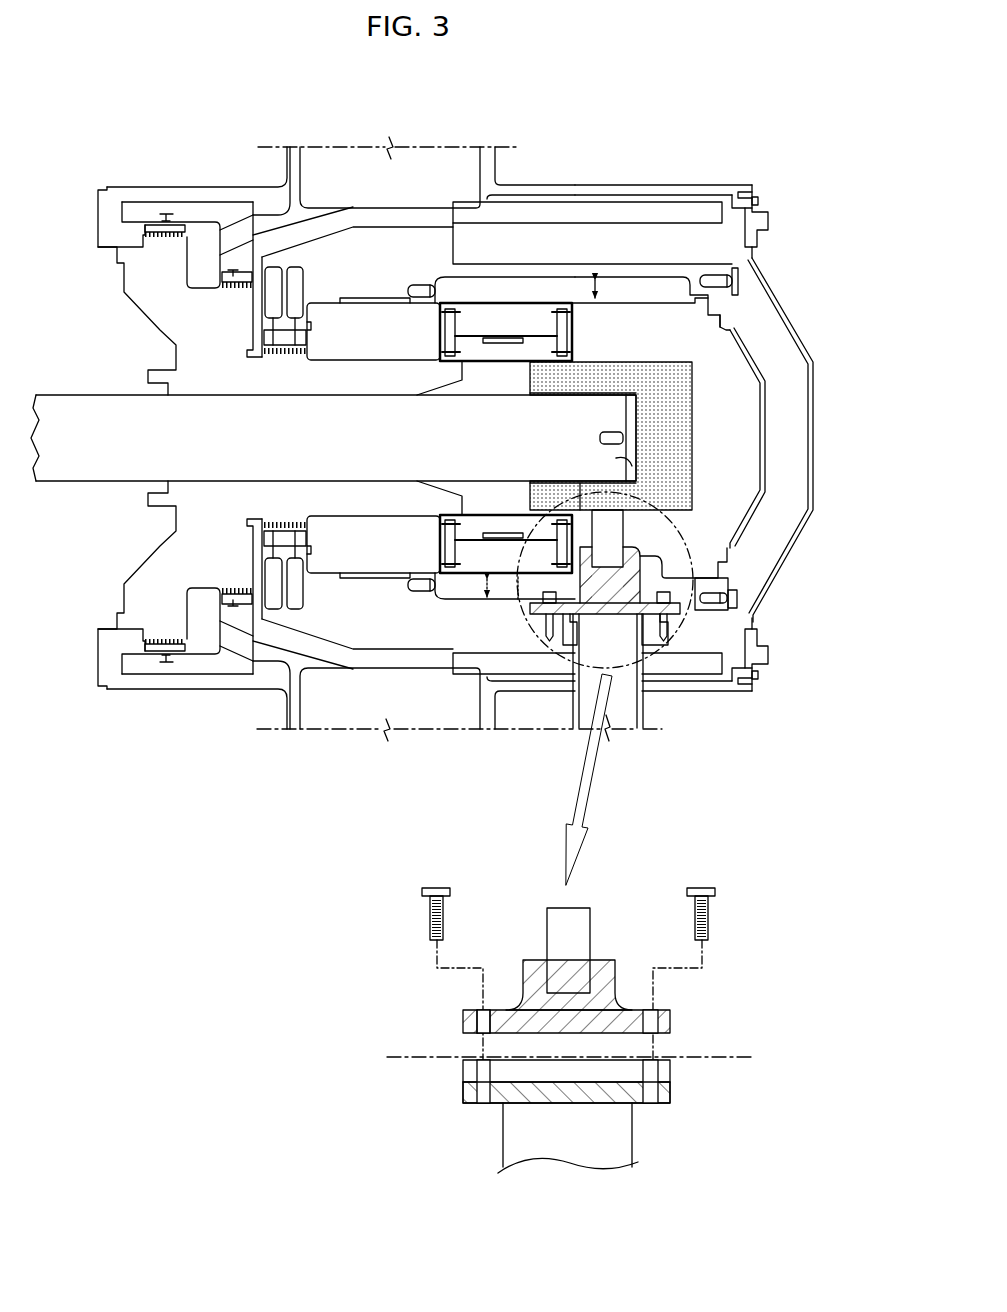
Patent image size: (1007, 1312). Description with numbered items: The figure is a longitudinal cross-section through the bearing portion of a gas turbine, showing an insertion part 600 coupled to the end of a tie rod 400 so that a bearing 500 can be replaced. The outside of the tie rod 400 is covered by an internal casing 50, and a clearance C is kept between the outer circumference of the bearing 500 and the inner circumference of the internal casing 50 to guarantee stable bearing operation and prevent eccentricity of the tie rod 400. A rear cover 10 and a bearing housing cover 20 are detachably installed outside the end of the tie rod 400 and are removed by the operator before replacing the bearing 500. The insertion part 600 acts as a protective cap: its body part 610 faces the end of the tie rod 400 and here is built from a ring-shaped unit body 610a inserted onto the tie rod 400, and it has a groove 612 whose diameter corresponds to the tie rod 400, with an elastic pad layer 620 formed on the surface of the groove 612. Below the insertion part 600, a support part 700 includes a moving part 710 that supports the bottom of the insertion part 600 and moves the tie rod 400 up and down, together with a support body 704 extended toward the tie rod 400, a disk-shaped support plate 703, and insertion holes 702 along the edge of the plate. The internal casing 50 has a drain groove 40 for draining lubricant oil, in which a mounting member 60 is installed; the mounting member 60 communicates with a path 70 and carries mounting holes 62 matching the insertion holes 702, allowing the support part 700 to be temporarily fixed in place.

The rear cover 10 is at (817, 441).
The bearing housing cover 20 is at (768, 460).
The drain groove 40 is at (595, 1067).
The internal casing 50 is at (592, 264).
The mounting member 60 is at (596, 612).
The mounting hole 62 is at (673, 1097).
The path 70 is at (618, 695).
The tie rod 400 is at (78, 384).
The bearing 500 is at (585, 331).
The insertion part 600 is at (710, 408).
The body part 610 is at (692, 382).
The unit body 610a is at (567, 370).
The groove 612 is at (600, 492).
The pad layer 620 is at (742, 340).
The support part 700 is at (665, 546).
The insertion hole 702 is at (673, 1022).
The support plate 703 is at (637, 1007).
The support body 704 is at (511, 1007).
The moving part 710 is at (588, 952).